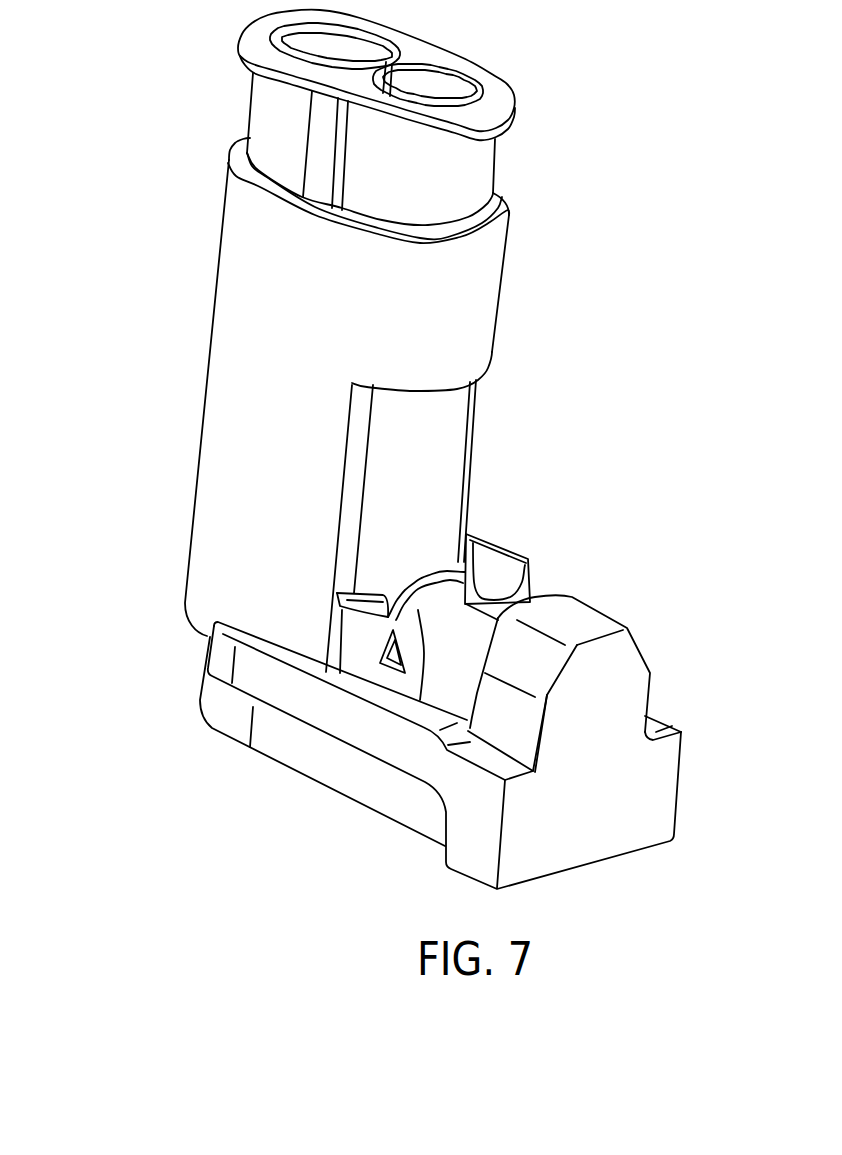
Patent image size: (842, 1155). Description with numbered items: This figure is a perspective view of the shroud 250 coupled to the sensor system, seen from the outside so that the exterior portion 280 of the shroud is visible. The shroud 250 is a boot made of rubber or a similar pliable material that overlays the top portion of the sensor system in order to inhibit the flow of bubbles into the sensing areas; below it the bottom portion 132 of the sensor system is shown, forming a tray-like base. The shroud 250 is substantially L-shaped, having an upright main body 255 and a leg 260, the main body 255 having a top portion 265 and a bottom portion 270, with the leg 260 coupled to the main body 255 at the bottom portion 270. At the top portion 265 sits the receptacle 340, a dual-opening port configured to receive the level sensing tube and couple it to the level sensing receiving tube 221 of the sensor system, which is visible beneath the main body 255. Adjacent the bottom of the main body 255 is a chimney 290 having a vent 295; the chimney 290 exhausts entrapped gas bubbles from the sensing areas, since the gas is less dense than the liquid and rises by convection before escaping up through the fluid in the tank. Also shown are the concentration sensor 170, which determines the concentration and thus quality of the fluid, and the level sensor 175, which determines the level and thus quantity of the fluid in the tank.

The bottom portion 132 is at (326, 822).
The concentration sensor 170 is at (600, 612).
The level sensor 175 is at (357, 545).
The level sensing receiving tube 221 is at (377, 433).
The shroud 250 is at (577, 304).
The main body 255 is at (218, 293).
The leg 260 is at (668, 723).
The top portion 265 is at (221, 104).
The bottom portion 270 is at (172, 626).
The exterior portion 280 is at (245, 360).
The chimney 290 is at (552, 578).
The vent 295 is at (488, 534).
The receptacle 340 is at (500, 70).